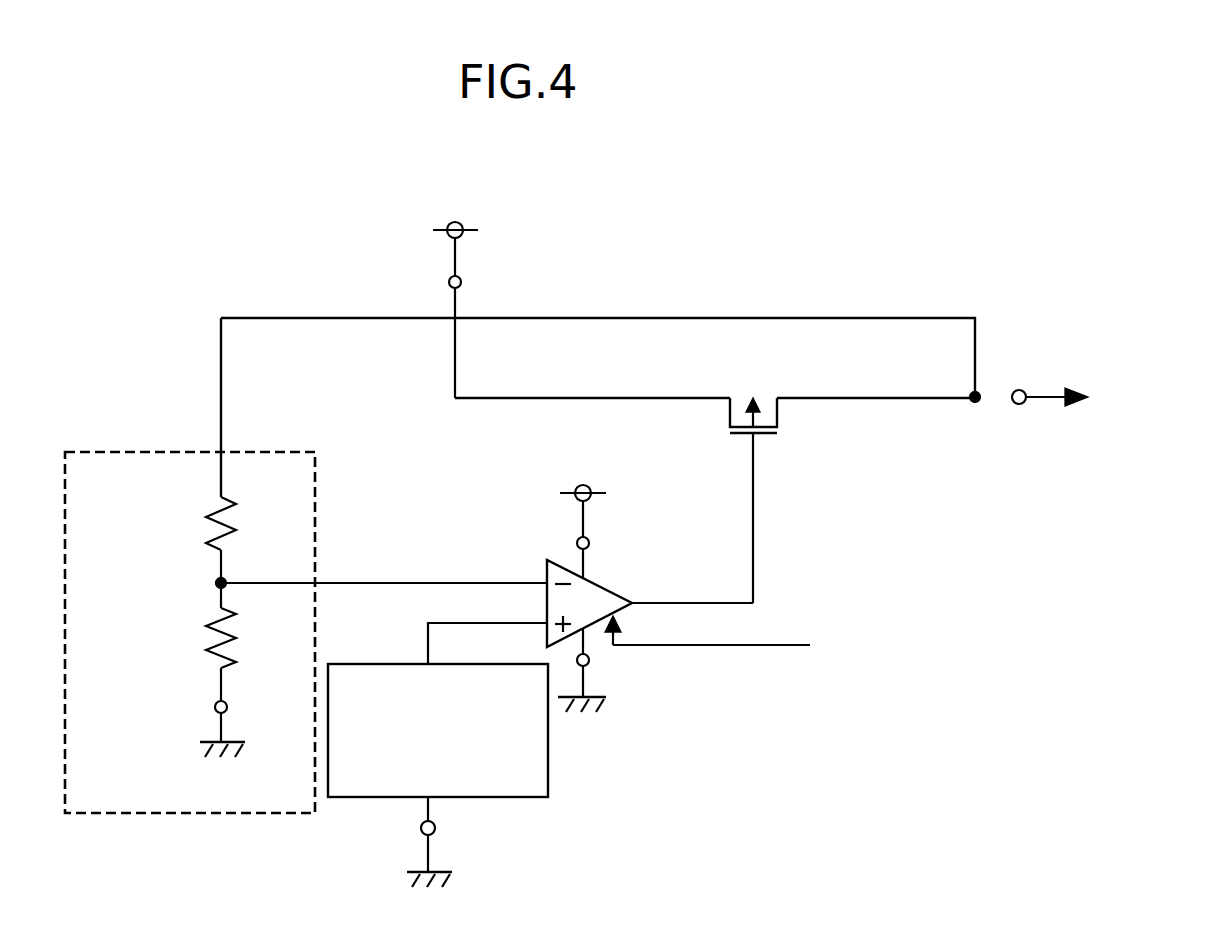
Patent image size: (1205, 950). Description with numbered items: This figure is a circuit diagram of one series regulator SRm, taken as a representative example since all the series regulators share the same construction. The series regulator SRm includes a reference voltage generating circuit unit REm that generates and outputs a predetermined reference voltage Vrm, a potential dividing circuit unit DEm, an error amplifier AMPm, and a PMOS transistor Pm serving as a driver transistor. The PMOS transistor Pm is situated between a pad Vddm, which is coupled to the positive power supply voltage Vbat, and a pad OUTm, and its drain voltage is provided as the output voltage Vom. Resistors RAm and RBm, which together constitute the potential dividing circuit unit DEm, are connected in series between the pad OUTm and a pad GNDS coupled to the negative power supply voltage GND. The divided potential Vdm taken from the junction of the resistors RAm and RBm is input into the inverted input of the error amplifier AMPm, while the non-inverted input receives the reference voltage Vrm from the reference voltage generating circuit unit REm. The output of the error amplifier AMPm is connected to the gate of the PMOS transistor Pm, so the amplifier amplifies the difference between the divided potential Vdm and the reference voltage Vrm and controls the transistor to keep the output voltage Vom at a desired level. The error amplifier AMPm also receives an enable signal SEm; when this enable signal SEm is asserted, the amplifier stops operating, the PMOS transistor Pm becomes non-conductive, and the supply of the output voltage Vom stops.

The series regulator SRm is at (775, 288).
The pad Vddm is at (462, 282).
The positive power supply voltage Vbat is at (522, 344).
The PMOS transistor Pm is at (727, 436).
The pad OUTm is at (1019, 405).
The output voltage Vom is at (1120, 395).
The error amplifier AMPm is at (607, 586).
The divided potential Vdm is at (384, 563).
The reference voltage Vrm is at (442, 643).
The enable signal SEm is at (752, 638).
The potential dividing circuit unit DEm is at (320, 500).
The resistor RAm is at (255, 540).
The resistor RBm is at (256, 640).
The pad GNDS is at (214, 708).
The negative power supply voltage GND is at (410, 814).
The reference voltage generating circuit unit REm is at (360, 799).